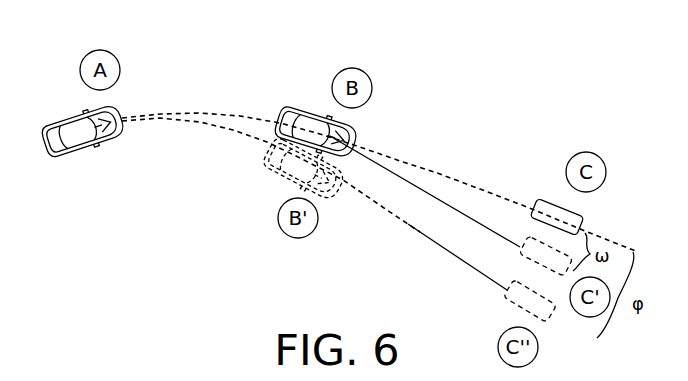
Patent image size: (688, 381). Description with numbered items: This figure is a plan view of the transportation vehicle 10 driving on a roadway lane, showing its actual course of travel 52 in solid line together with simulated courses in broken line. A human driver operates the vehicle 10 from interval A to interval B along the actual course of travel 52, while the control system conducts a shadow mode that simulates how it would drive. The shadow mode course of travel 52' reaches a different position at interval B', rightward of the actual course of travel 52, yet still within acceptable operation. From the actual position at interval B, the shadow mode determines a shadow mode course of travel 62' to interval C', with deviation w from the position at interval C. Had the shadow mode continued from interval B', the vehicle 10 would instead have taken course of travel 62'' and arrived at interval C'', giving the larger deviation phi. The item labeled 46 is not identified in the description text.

The transportation vehicle 10 is at (49, 108).
The planned travel path 46 is at (380, 139).
The actual course of travel 52 is at (380, 155).
The shadow mode course of travel 52' is at (271, 175).
The shadow mode course of travel 62' is at (425, 187).
The course of travel 62'' is at (433, 250).